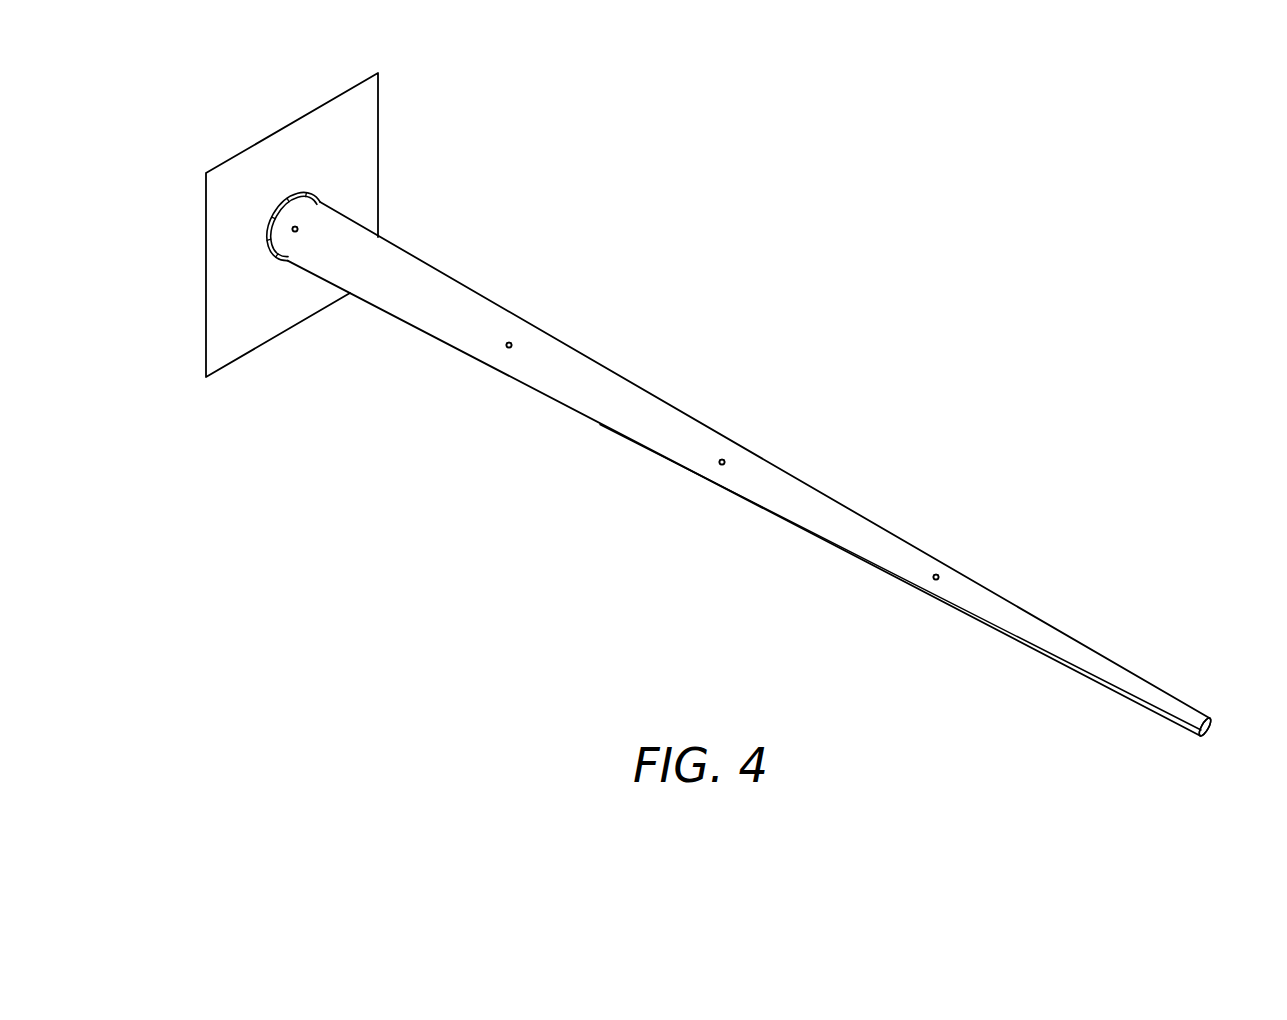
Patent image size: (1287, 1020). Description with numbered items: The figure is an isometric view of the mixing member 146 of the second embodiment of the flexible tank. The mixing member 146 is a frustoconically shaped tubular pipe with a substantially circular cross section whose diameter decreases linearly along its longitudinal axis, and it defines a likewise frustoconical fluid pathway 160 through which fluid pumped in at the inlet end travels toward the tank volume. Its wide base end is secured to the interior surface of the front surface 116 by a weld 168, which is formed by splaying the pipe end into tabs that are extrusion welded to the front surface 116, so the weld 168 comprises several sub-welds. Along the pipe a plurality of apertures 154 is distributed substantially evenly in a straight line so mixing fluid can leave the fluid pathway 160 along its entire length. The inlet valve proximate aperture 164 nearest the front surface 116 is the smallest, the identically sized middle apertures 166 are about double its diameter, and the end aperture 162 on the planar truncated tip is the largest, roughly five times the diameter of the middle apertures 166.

The front surface 116 is at (230, 281).
The mixing member 146 is at (823, 507).
The plurality of apertures 154 is at (297, 210).
The fluid pathway 160 is at (627, 428).
The end aperture 162 is at (1211, 741).
The inlet valve proximate aperture 164 is at (293, 249).
The middle apertures 166 is at (506, 363).
The weld 168 is at (332, 188).